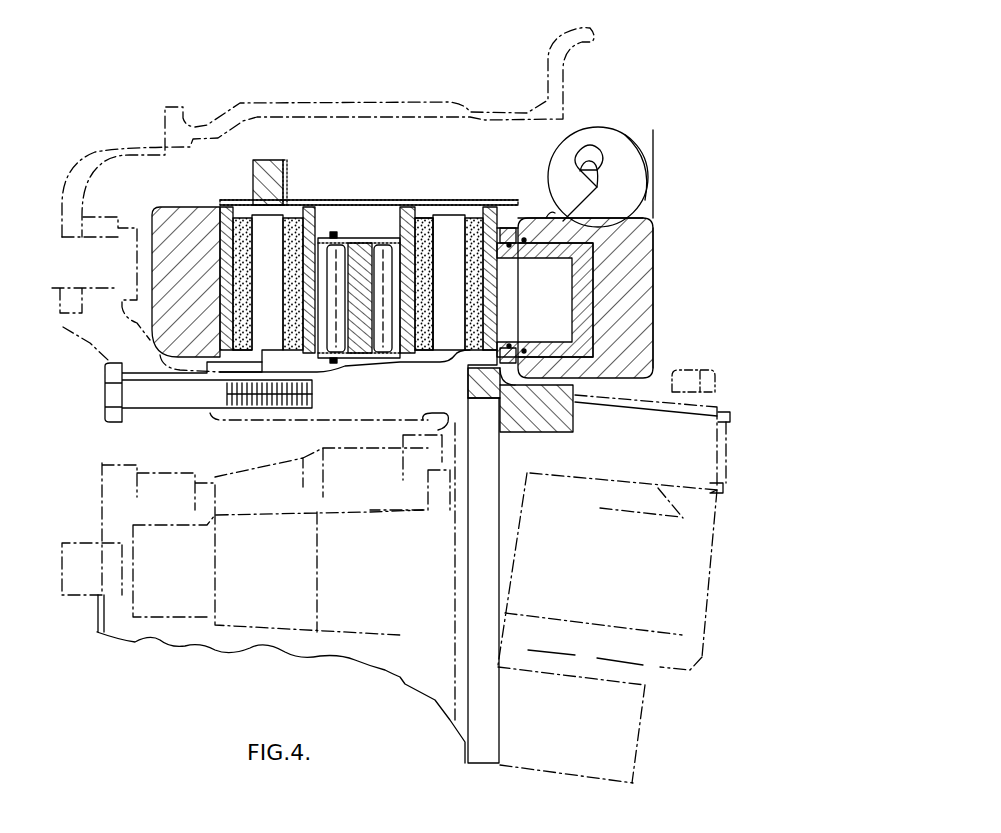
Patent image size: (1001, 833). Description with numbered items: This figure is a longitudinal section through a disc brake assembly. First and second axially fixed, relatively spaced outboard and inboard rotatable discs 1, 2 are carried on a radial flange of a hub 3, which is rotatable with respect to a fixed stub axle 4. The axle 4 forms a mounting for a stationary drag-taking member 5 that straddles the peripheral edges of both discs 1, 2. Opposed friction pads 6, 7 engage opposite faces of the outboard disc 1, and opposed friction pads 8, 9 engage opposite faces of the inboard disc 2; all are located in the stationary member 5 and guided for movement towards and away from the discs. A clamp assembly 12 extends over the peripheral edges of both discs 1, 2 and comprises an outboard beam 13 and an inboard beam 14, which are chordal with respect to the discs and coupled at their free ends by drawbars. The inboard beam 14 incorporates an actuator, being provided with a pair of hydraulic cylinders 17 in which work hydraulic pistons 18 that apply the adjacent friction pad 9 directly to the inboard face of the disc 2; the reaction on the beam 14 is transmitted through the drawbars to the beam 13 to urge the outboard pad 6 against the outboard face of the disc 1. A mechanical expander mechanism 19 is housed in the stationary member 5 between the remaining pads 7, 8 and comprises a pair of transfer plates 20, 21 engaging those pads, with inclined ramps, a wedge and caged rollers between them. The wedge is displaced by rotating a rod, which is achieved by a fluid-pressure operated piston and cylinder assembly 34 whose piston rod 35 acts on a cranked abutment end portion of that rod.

The outboard rotatable disc 1 is at (267, 243).
The inboard rotatable disc 2 is at (447, 237).
The hub 3 is at (137, 440).
The stub axle 4 is at (293, 610).
The stationary drag-taking member 5 is at (555, 420).
The friction pad 6 is at (242, 235).
The friction pad 7 is at (312, 240).
The friction pad 8 is at (423, 240).
The friction pad 9 is at (477, 223).
The clamp assembly 12 is at (640, 282).
The outboard beam 13 is at (180, 313).
The inboard beam 14 is at (635, 303).
The hydraulic cylinder 17 is at (595, 332).
The hydraulic piston 18 is at (580, 265).
The mechanical expander mechanism 19 is at (363, 253).
The transfer plate 20 is at (327, 240).
The transfer plate 21 is at (422, 230).
The fluid-pressure operated piston and cylinder assembly 34 is at (620, 157).
The piston rod 35 is at (582, 185).